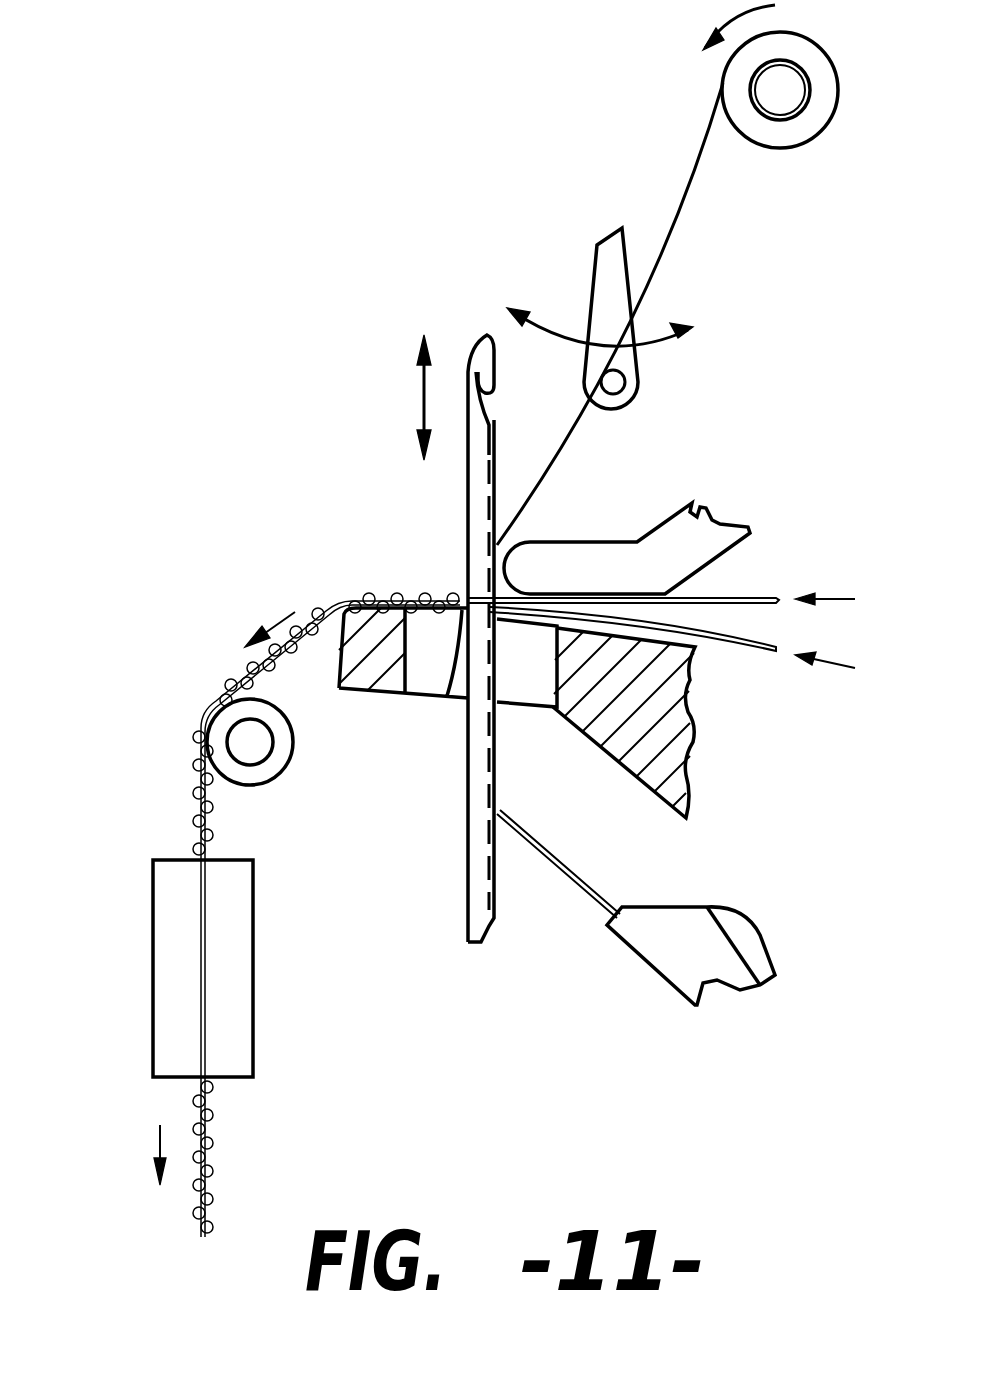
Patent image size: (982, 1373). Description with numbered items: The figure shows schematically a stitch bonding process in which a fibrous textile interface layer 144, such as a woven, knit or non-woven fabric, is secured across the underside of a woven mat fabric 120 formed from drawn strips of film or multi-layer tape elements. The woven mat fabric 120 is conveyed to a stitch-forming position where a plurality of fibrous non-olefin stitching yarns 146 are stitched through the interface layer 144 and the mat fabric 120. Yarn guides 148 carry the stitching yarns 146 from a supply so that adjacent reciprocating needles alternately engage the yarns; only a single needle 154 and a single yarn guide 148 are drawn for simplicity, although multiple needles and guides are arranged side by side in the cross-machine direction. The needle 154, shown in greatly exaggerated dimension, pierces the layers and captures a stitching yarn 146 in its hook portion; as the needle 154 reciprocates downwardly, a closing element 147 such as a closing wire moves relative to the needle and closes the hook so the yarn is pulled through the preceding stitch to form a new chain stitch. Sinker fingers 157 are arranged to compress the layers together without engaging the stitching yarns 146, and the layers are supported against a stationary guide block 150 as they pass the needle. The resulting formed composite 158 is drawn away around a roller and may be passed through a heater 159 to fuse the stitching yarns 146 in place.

The woven mat fabric 120 is at (748, 598).
The fibrous textile interface layer 144 is at (752, 640).
The stitching yarns 146 is at (680, 218).
The closing element 147 is at (580, 880).
The yarn guides 148 is at (640, 383).
The tape guide block 150 is at (455, 665).
The needle 154 is at (482, 340).
The sinker fingers 157 is at (692, 503).
The formed composite 158 is at (193, 797).
The heater 159 is at (167, 965).